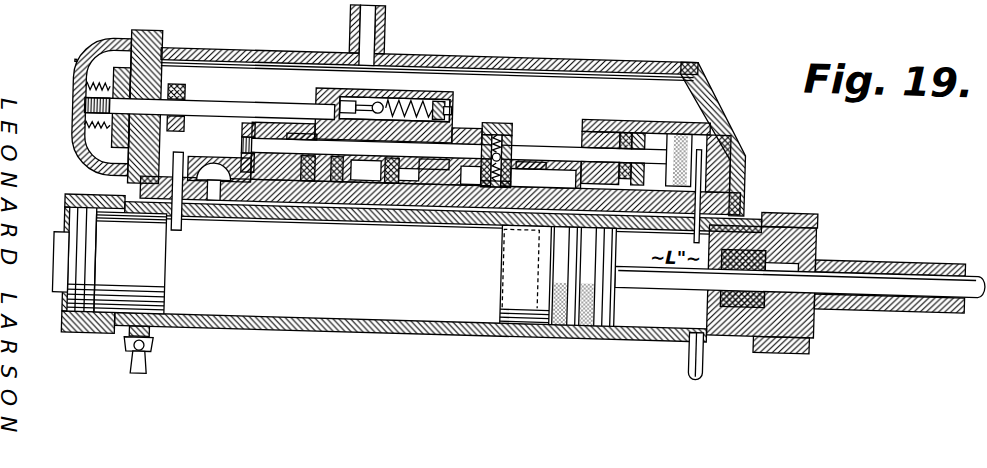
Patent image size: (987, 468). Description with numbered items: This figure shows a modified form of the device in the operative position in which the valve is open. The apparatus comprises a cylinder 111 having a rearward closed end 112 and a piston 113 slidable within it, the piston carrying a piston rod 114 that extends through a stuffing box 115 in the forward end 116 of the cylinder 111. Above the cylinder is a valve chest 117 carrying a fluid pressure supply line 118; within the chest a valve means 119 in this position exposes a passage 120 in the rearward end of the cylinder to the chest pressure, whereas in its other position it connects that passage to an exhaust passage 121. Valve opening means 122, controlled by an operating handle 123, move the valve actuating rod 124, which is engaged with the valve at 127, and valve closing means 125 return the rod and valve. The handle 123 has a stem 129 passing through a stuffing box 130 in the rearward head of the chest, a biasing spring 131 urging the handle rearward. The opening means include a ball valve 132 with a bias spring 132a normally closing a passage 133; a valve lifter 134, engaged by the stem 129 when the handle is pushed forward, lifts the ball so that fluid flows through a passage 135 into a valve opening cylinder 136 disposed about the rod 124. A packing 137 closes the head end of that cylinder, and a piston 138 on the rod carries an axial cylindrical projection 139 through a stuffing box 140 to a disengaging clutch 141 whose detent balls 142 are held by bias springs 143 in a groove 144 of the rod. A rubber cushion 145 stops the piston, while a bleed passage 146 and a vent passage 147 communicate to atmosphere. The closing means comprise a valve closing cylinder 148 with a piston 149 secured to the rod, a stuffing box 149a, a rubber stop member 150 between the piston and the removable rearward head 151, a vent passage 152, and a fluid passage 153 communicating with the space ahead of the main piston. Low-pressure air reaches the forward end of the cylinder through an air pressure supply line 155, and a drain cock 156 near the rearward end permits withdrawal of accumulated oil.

The cylinder 111 is at (369, 323).
The rearward closed end 112 is at (109, 260).
The piston 113 is at (508, 291).
The piston rod 114 is at (664, 267).
The stuffing box 115 is at (734, 325).
The forward end 116 is at (804, 222).
The valve chest 117 is at (573, 49).
The fluid pressure supply line 118 is at (377, 17).
The valve means 119 is at (211, 175).
The passage 120 is at (180, 181).
The exhaust passage 121 is at (203, 190).
The valve opening means 122 is at (420, 83).
The operating handle 123 is at (64, 64).
The valve actuating rod 124 is at (532, 135).
The valve closing means 125 is at (668, 104).
The engagement of rod with valve 127 is at (247, 156).
The stem 129 is at (210, 97).
The stuffing box 130 is at (128, 95).
The biasing spring 131 is at (67, 79).
The ball valve 132 is at (378, 95).
The bias spring 132a is at (430, 91).
The passage 133 is at (375, 89).
The valve lifter 134 is at (334, 86).
The passage 135 is at (305, 129).
The valve opening cylinder 136 is at (366, 166).
The packing 137 is at (307, 162).
The piston 138 is at (396, 170).
The axial cylindrical projection 139 is at (474, 162).
The stuffing box 140 is at (437, 166).
The disengaging clutch 141 is at (498, 107).
The detent balls 142 is at (519, 158).
The bias springs 143 is at (504, 169).
The groove 144 is at (499, 139).
The rubber cushion 145 is at (450, 98).
The bleed passage 146 is at (340, 183).
The vent passage 147 is at (412, 166).
The valve closing cylinder 148 is at (678, 109).
The piston 149 is at (715, 113).
The stuffing box 149a is at (611, 106).
The rubber stop member 150 is at (636, 118).
The rearward head 151 is at (585, 118).
The vent passage 152 is at (647, 198).
The fluid passage 153 is at (700, 173).
The air pressure supply line 155 is at (690, 352).
The drain cock 156 is at (164, 348).